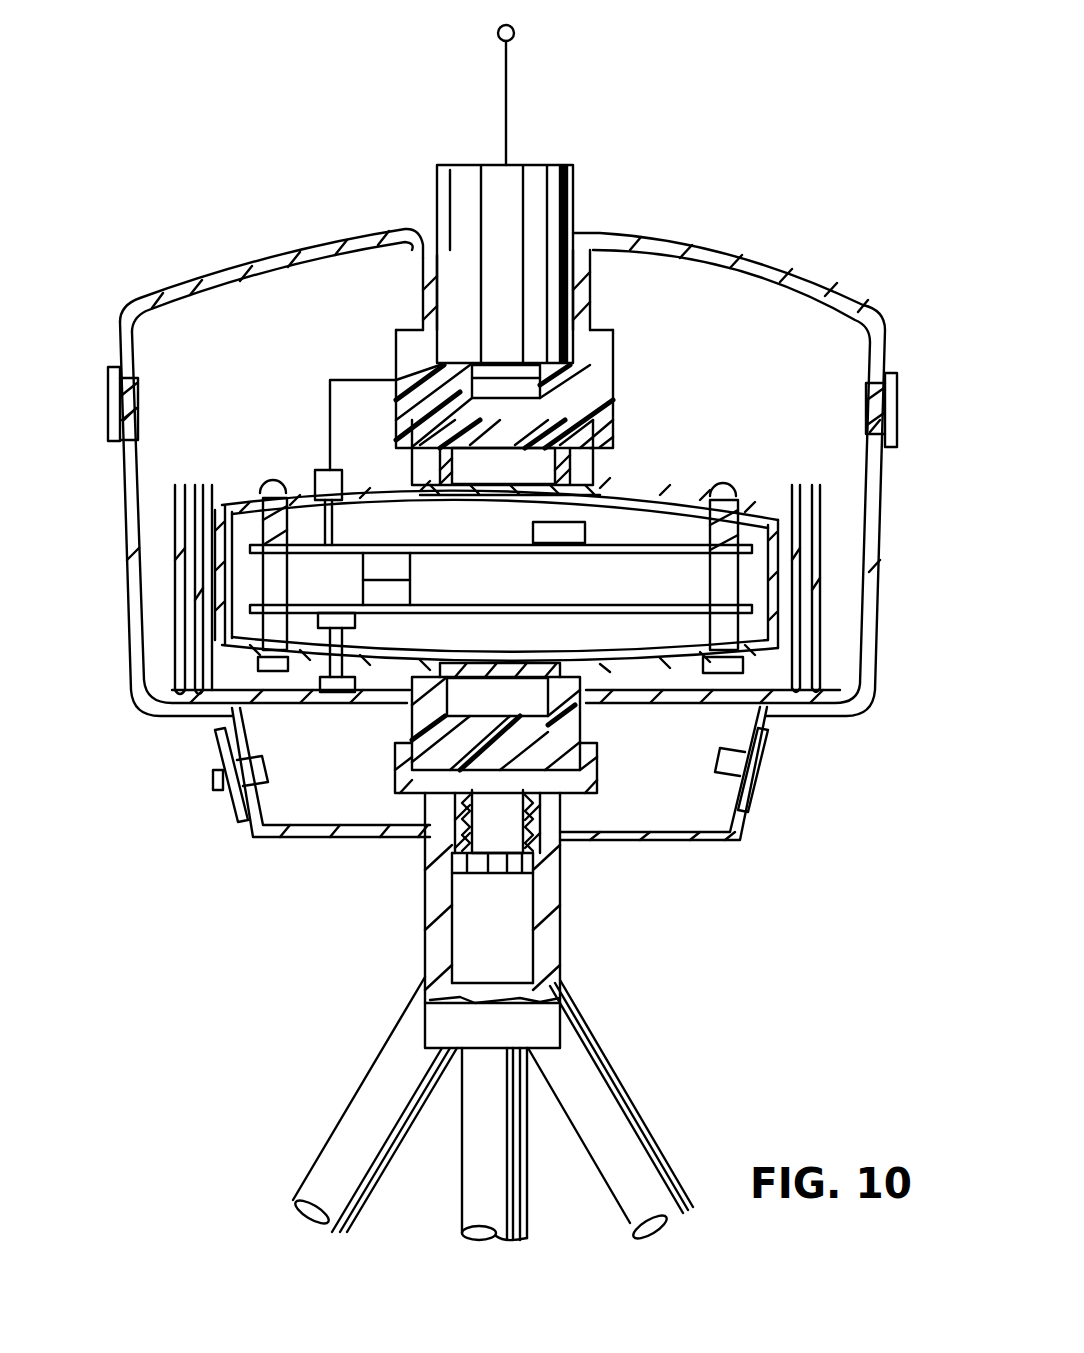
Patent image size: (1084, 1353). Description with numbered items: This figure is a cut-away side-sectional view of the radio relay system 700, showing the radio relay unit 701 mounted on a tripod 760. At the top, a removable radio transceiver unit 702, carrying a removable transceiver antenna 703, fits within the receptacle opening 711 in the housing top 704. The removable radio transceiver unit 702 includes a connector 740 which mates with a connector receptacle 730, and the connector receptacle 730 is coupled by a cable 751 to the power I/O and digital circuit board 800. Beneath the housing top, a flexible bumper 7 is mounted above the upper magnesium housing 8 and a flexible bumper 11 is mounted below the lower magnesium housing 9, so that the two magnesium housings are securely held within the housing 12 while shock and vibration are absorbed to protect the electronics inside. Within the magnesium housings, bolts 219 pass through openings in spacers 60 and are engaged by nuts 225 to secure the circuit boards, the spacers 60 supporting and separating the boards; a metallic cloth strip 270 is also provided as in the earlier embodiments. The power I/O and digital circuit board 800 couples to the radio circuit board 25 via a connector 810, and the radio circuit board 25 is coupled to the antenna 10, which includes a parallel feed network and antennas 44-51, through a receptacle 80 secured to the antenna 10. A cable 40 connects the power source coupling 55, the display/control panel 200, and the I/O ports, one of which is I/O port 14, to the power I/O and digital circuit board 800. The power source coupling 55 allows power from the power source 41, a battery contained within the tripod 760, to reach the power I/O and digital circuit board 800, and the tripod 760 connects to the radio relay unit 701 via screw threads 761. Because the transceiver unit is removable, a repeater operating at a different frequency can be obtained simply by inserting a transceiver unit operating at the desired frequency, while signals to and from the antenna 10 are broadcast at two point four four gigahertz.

The removable transceiver antenna 703 is at (515, 33).
The removable radio transceiver unit 702 is at (574, 190).
The receptacle opening 711 is at (592, 245).
The housing top 704 is at (740, 248).
The radio relay unit 701 is at (322, 176).
The connector 740 is at (478, 355).
The connector receptacle 730 is at (532, 395).
The flexible bumper 7 is at (598, 468).
The upper magnesium housing 8 is at (766, 505).
The metallic cloth strip 270 is at (782, 566).
The power I/O and digital circuit board 800 is at (395, 540).
The connector 810 is at (410, 580).
The spacers 60 is at (278, 578).
The radio circuit board 25 is at (622, 622).
The cable 40 is at (675, 515).
The bolts 219 is at (273, 490).
The cable 751 is at (330, 395).
The receptacle 80 is at (352, 690).
The nuts 225 is at (255, 690).
The flexible bumper 11 is at (582, 727).
The power source coupling 55 is at (515, 841).
The power source 41 is at (512, 953).
The screw threads 761 is at (424, 830).
The tripod 760 is at (606, 1035).
The display/control panel 200 is at (230, 800).
The I/O port 14 is at (768, 790).
The lower magnesium housing 9 is at (740, 660).
The antenna 10 is at (150, 688).
The housing 12 is at (866, 635).
The antennas 44-51 is at (186, 468).
The radio relay system 700 is at (865, 883).